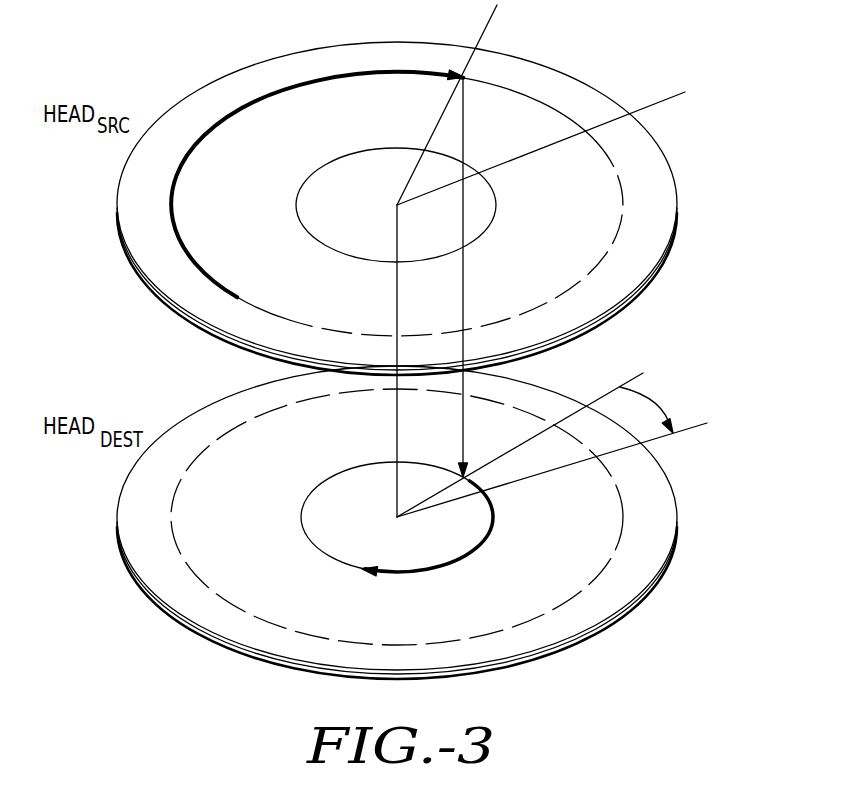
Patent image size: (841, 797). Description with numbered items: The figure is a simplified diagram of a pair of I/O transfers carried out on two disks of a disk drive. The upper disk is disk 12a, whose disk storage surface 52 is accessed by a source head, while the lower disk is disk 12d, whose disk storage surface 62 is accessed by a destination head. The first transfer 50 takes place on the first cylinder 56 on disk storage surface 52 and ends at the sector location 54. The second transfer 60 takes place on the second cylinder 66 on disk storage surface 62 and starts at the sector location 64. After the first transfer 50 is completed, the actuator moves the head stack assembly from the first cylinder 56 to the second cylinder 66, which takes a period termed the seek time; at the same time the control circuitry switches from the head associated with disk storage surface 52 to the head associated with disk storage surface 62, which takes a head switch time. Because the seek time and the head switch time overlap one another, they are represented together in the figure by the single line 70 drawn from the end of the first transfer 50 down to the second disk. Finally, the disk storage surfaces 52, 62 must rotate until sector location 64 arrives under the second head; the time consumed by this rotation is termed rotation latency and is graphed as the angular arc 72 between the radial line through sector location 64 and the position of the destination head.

The disk 12a is at (661, 304).
The disk 12d is at (663, 614).
The first transfer 50 is at (387, 70).
The disk storage surface 52 is at (658, 146).
The sector location 54 is at (466, 76).
The first cylinder 56 is at (292, 319).
The second transfer 60 is at (466, 555).
The disk storage surface 62 is at (678, 532).
The sector location 64 is at (490, 488).
The second cylinder 66 is at (296, 206).
The line 70 is at (463, 285).
The angular arc 72 is at (647, 403).